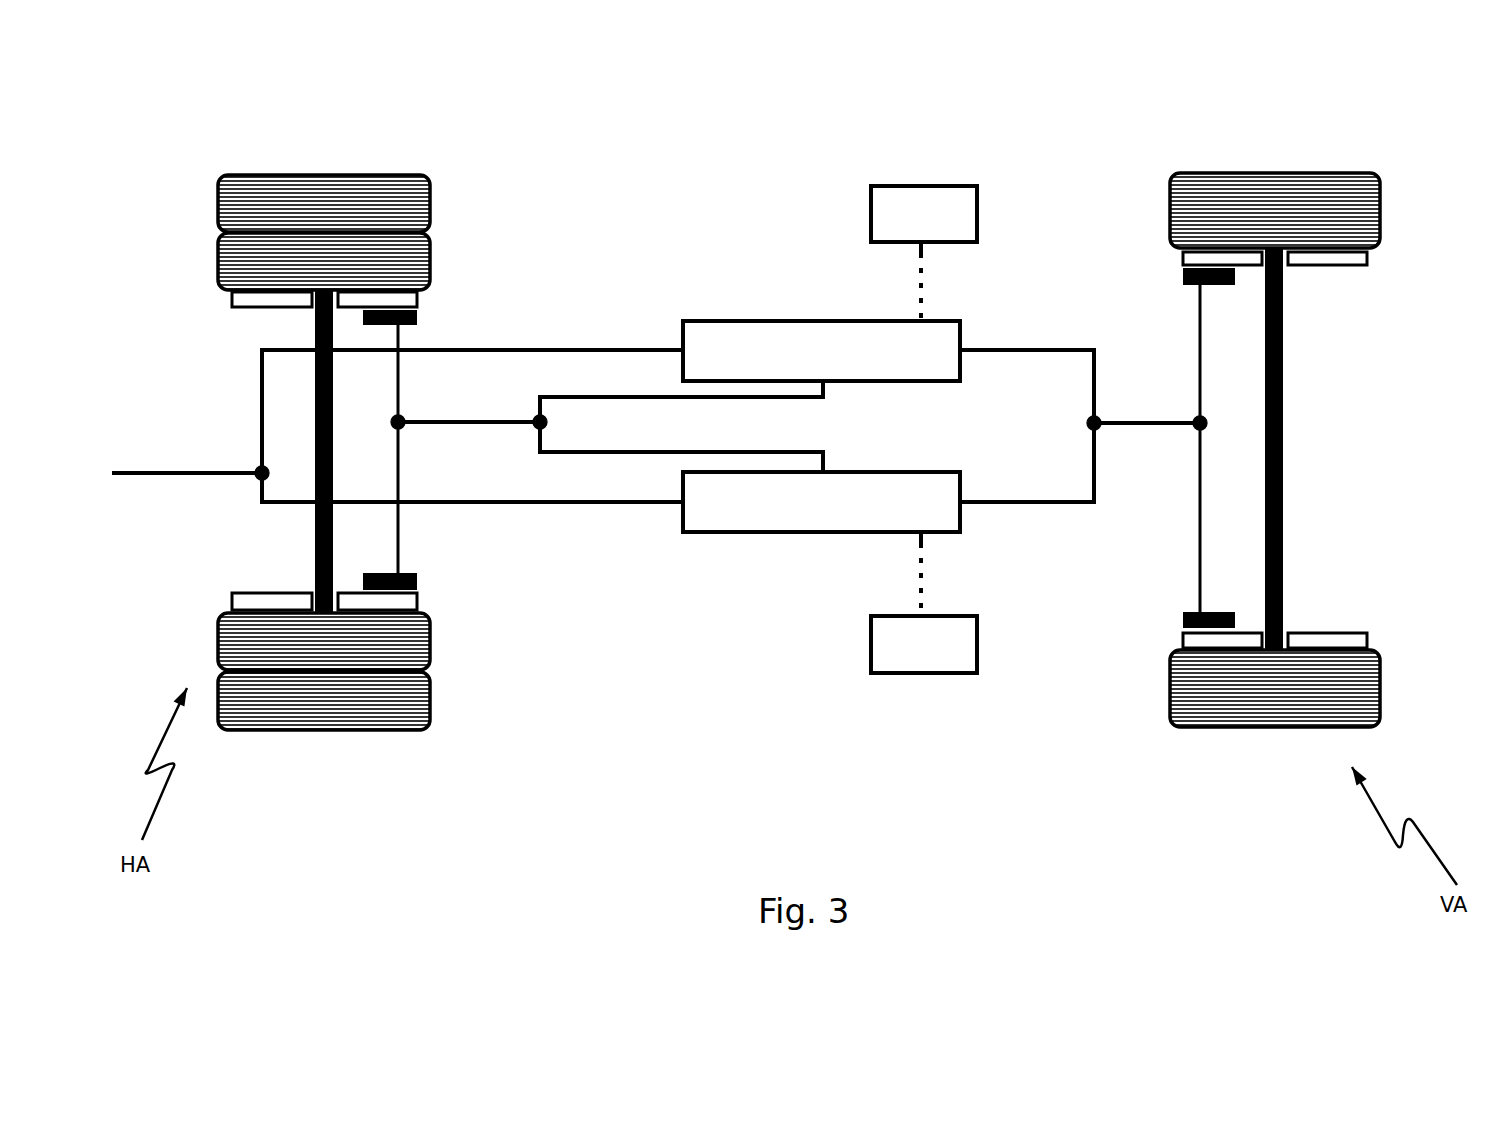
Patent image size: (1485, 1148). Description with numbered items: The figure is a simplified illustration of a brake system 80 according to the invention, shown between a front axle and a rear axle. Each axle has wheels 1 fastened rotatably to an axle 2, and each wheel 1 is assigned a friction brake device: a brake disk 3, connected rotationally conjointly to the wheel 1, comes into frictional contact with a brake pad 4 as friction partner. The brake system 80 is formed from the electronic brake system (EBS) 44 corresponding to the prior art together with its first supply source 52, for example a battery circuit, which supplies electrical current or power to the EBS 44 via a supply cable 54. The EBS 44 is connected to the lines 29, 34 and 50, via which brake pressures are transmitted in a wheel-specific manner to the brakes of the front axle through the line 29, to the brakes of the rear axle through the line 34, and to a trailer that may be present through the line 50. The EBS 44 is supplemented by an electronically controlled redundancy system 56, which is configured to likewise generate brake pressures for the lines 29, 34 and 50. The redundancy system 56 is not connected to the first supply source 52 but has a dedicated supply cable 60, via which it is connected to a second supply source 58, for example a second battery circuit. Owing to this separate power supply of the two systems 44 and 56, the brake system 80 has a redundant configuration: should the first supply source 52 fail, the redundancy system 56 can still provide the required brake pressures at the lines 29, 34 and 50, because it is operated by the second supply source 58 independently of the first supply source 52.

The wheel 1 is at (305, 180).
The axle 2 is at (315, 358).
The brake disk 3 is at (257, 307).
The brake pad 4 is at (1183, 632).
The line 29 is at (1205, 500).
The line 34 is at (418, 422).
The electronic brake system (EBS) 44 is at (718, 532).
The line 50 is at (165, 473).
The first supply source 52 is at (871, 662).
The supply cable 54 is at (920, 578).
The redundancy system 56 is at (735, 321).
The second supply source 58 is at (871, 193).
The supply cable 60 is at (920, 258).
The brake system 80 is at (585, 273).